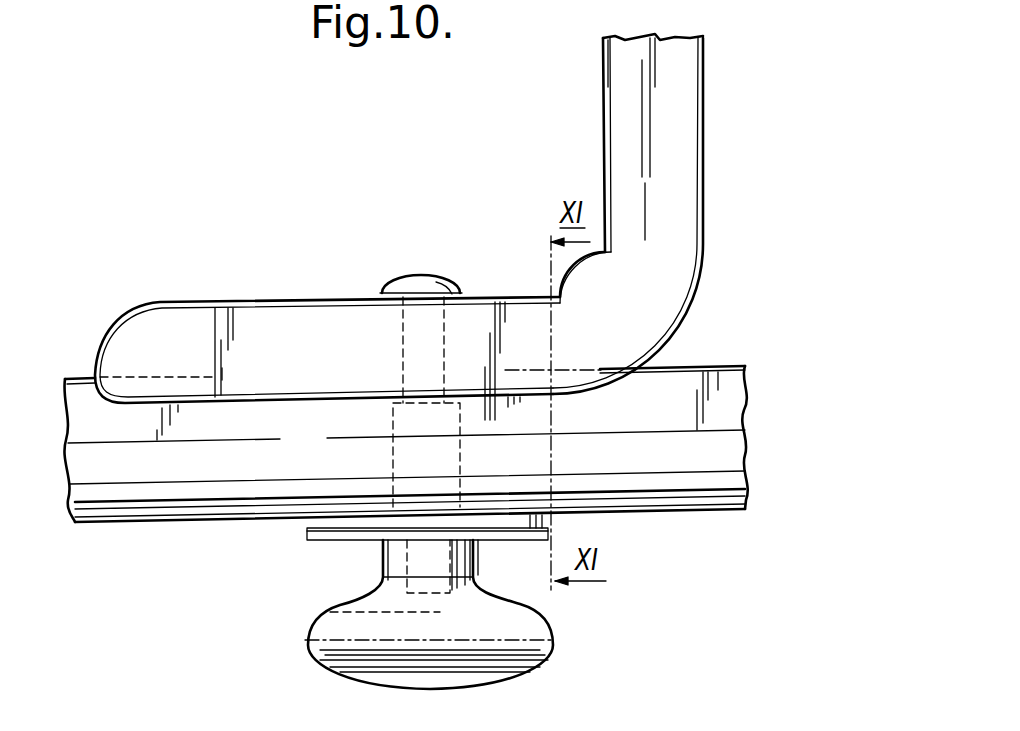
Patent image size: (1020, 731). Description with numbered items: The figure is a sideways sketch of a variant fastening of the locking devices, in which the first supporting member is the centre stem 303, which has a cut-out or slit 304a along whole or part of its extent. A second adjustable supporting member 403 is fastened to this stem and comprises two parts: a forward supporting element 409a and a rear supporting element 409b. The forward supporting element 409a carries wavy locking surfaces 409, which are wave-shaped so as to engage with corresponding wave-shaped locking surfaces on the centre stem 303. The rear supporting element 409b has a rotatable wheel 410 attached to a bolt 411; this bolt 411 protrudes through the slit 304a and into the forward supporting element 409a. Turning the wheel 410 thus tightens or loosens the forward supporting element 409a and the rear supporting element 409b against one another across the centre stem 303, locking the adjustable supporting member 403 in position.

The centre stem 303 is at (636, 473).
The slit 304a is at (395, 452).
The adjustable supporting member 403 is at (710, 207).
The wavy locking surfaces 409 is at (177, 376).
The forward supporting element 409a is at (620, 195).
The rear supporting element 409b is at (553, 636).
The rotatable wheel 410 is at (318, 632).
The bolt 411 is at (403, 348).